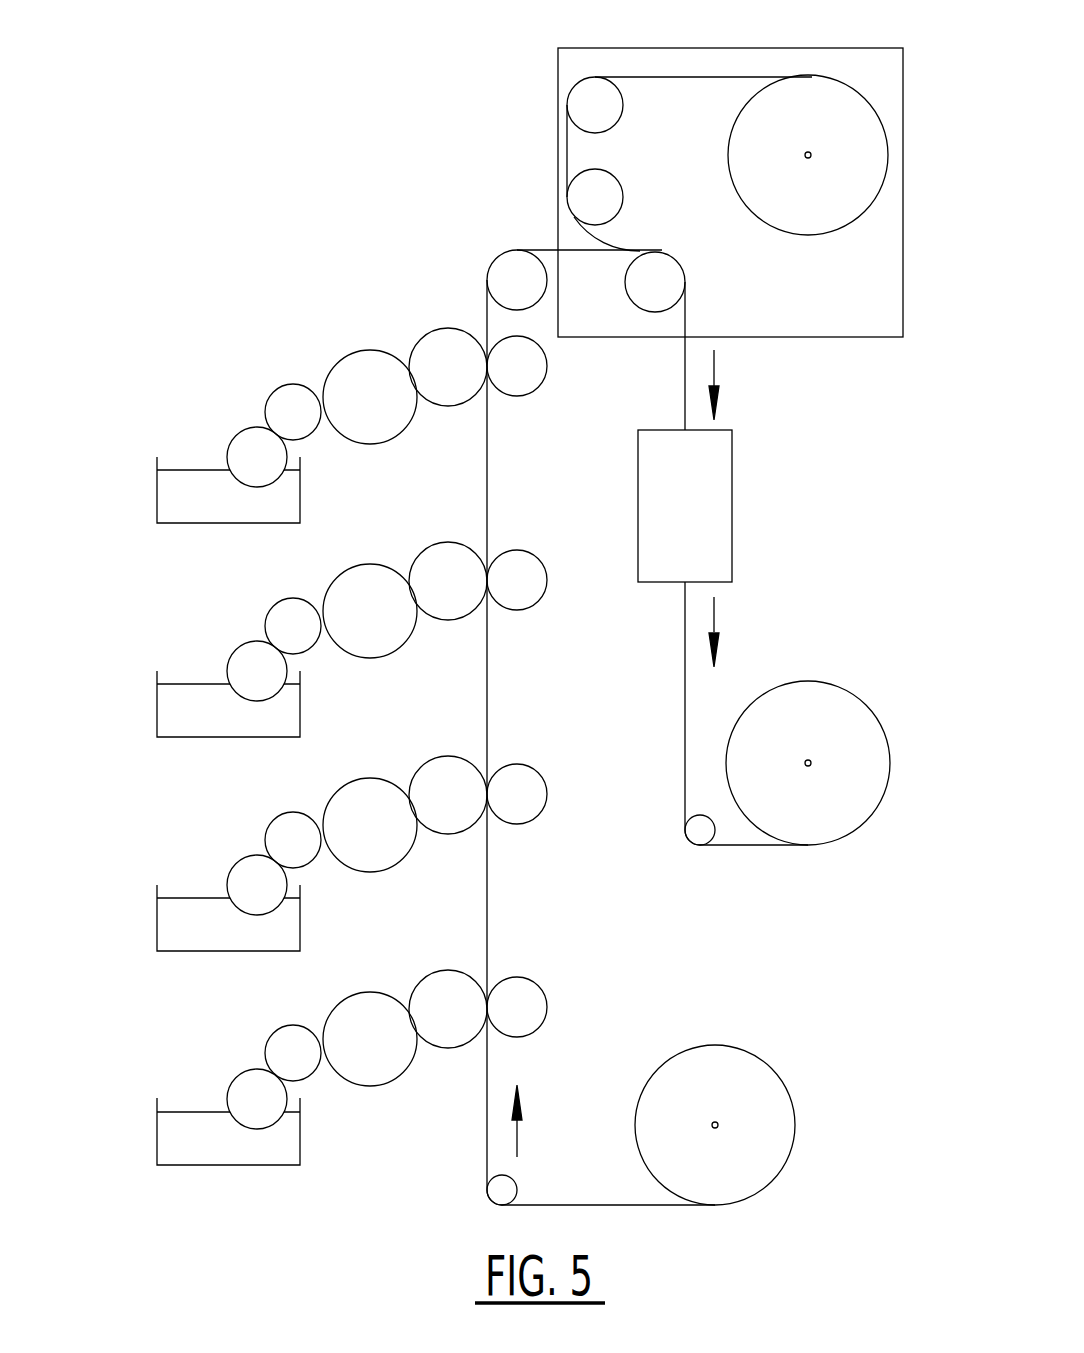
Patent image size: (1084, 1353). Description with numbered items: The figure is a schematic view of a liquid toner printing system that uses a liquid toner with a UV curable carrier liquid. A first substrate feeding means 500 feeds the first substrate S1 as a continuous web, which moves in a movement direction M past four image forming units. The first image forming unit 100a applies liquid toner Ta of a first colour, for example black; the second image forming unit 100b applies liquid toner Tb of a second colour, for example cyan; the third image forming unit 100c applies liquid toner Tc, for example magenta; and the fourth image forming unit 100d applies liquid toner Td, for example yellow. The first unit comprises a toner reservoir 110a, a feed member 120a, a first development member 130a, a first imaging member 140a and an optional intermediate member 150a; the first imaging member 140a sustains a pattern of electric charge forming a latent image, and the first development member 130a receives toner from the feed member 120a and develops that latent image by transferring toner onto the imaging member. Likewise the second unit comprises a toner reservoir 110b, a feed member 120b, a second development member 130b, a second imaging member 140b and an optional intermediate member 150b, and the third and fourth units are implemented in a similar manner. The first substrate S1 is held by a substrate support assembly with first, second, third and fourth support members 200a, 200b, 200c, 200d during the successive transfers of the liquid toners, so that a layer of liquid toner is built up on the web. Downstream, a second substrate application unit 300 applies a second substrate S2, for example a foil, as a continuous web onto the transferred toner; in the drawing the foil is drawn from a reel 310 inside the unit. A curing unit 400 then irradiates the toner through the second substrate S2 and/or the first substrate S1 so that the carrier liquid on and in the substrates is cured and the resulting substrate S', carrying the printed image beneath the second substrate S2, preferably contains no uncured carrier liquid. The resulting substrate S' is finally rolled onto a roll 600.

The second substrate application unit 300 is at (673, 50).
The supply reel 310 is at (836, 220).
The second substrate S2 is at (718, 77).
The first substrate S1 is at (487, 1112).
The resulting substrate S' is at (693, 563).
The curing unit 400 is at (720, 463).
The first substrate feeding means 500 is at (737, 1063).
The roll 600 is at (820, 698).
The movement direction M is at (517, 1133).
The first support member 200a is at (532, 1007).
The second support member 200b is at (525, 795).
The third support member 200c is at (525, 582).
The fourth support member 200d is at (522, 357).
The first image forming unit 100a is at (278, 1079).
The second image forming unit 100b is at (281, 858).
The third image forming unit 100c is at (281, 692).
The fourth image forming unit 100d is at (281, 473).
The toner reservoir 110a is at (258, 1166).
The toner reservoir 110b is at (157, 927).
The feed member 120a is at (245, 1090).
The feed member 120b is at (253, 883).
The first development member 130a is at (275, 1040).
The second development member 130b is at (295, 823).
The first imaging member 140a is at (366, 1007).
The second imaging member 140b is at (372, 810).
The intermediate member 150a is at (442, 992).
The intermediate member 150b is at (443, 782).
The first liquid toner Ta is at (183, 1160).
The second liquid toner Tb is at (172, 930).
The third liquid toner Tc is at (178, 718).
The fourth liquid toner Td is at (178, 500).